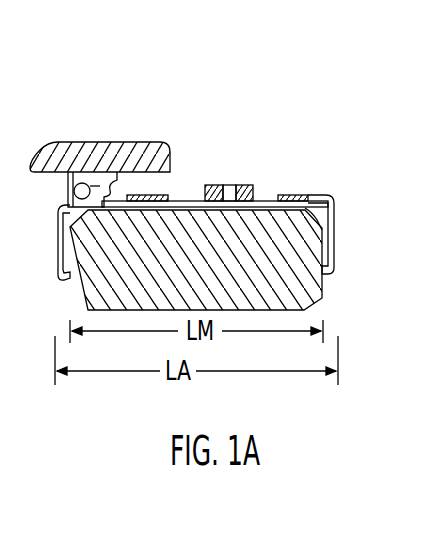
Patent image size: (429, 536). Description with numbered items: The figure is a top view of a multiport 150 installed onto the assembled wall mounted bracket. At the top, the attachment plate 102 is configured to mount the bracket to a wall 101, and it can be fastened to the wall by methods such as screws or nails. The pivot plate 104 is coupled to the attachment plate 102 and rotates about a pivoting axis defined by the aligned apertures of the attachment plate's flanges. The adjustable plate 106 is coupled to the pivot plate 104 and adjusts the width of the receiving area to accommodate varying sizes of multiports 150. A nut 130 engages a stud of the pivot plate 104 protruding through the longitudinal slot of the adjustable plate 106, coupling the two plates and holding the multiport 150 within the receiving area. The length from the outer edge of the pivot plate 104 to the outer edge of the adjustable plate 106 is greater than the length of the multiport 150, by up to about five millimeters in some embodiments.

The wall 101 is at (140, 153).
The attachment plate 102 is at (84, 184).
The pivot plate 104 is at (58, 222).
The adjustable plate 106 is at (303, 195).
The nut 130 is at (210, 185).
The multiport 150 is at (293, 238).